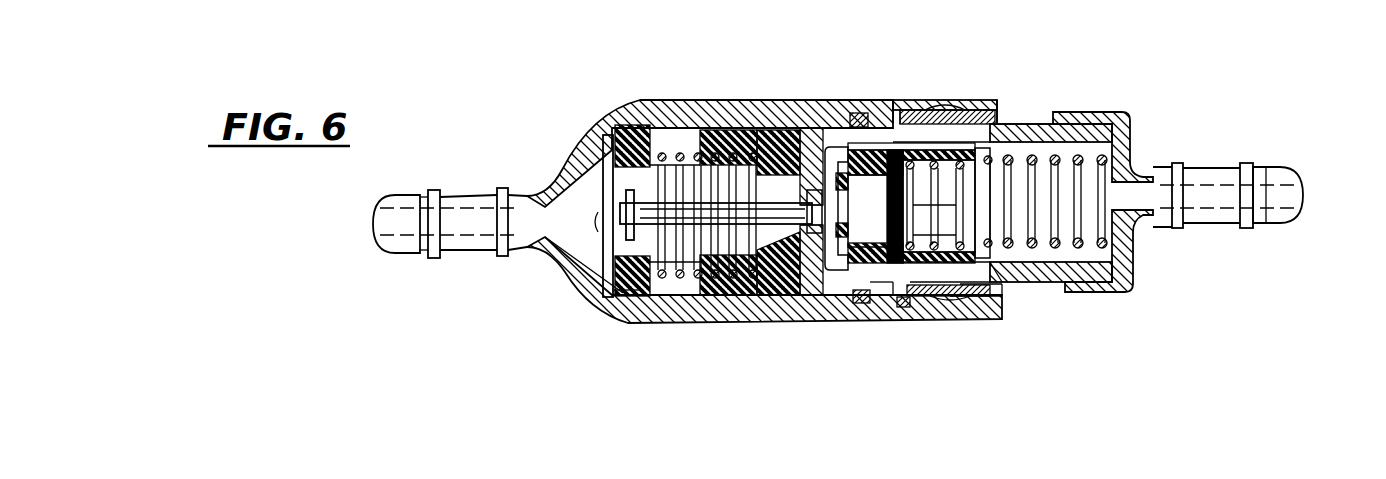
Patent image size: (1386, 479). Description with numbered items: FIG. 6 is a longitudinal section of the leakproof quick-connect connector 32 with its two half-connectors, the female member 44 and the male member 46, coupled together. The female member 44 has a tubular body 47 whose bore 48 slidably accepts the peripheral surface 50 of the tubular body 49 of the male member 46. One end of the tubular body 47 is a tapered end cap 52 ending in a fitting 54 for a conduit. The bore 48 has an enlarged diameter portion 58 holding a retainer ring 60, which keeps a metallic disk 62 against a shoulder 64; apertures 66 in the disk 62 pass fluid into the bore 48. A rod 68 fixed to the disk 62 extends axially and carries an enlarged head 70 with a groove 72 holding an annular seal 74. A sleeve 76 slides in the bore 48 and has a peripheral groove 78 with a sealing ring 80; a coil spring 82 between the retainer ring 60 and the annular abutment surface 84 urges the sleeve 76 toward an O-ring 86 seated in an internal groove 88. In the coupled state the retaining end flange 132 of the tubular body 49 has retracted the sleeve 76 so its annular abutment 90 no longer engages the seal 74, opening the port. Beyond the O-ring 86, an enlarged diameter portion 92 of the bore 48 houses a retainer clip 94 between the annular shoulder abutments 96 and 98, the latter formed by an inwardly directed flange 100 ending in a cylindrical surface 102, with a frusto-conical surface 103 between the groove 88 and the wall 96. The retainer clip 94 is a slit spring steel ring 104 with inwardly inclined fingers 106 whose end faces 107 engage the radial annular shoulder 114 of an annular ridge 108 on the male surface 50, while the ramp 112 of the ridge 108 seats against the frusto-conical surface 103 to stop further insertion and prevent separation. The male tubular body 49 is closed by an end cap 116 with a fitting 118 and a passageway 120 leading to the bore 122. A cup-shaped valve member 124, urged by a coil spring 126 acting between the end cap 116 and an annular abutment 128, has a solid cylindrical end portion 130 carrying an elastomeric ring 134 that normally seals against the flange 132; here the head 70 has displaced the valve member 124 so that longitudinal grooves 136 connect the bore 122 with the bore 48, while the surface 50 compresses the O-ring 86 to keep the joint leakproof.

The leakproof quick-connect connector 32 is at (820, 92).
The female member 44 is at (748, 191).
The male member 46 is at (1030, 108).
The tubular body 47 is at (704, 108).
The bore 48 is at (685, 108).
The tubular body 49 is at (1130, 187).
The peripheral surface 50 is at (833, 110).
The end cap 52 is at (562, 157).
The fitting 54 is at (428, 253).
The enlarged diameter portion 58 is at (630, 298).
The retainer ring 60 is at (632, 288).
The disk 62 is at (605, 235).
The shoulder 64 is at (603, 295).
The apertures 66 is at (643, 245).
The rod 68 is at (688, 202).
The enlarged head 70 is at (842, 198).
The groove 72 is at (721, 211).
The annular seal 74 is at (828, 213).
The sleeve 76 is at (708, 296).
The peripheral groove 78 is at (770, 296).
The sealing ring 80 is at (792, 108).
The coil spring 82 is at (665, 298).
The annular abutment surface 84 is at (742, 108).
The O-ring 86 is at (860, 300).
The internal groove 88 is at (862, 118).
The annular abutment 90 is at (740, 298).
The enlarged diameter portion 92 is at (1000, 120).
The retainer clip 94 is at (965, 300).
The annular shoulder abutment 96 is at (905, 302).
The annular shoulder abutment 98 is at (995, 300).
The flange 100 is at (1000, 300).
The cylindrical surface 102 is at (1015, 120).
The frusto-conical surface 103 is at (888, 305).
The spring steel ring 104 is at (920, 122).
The fingers 106 is at (930, 118).
The end face 107 is at (905, 125).
The annular ridge 108 is at (898, 125).
The ramp 112 is at (883, 295).
The radial annular shoulder 114 is at (920, 305).
The end cap 116 is at (1128, 138).
The fitting 118 is at (1228, 168).
The passageway 120 is at (1138, 195).
The bore 122 is at (1090, 275).
The valve member 124 is at (1018, 280).
The coil spring 126 is at (1085, 150).
The annular abutment 128 is at (912, 170).
The solid cylindrical end portion 130 is at (895, 237).
The retaining end flange 132 is at (815, 296).
The elastomeric ring 134 is at (895, 208).
The longitudinal grooves 136 is at (980, 300).